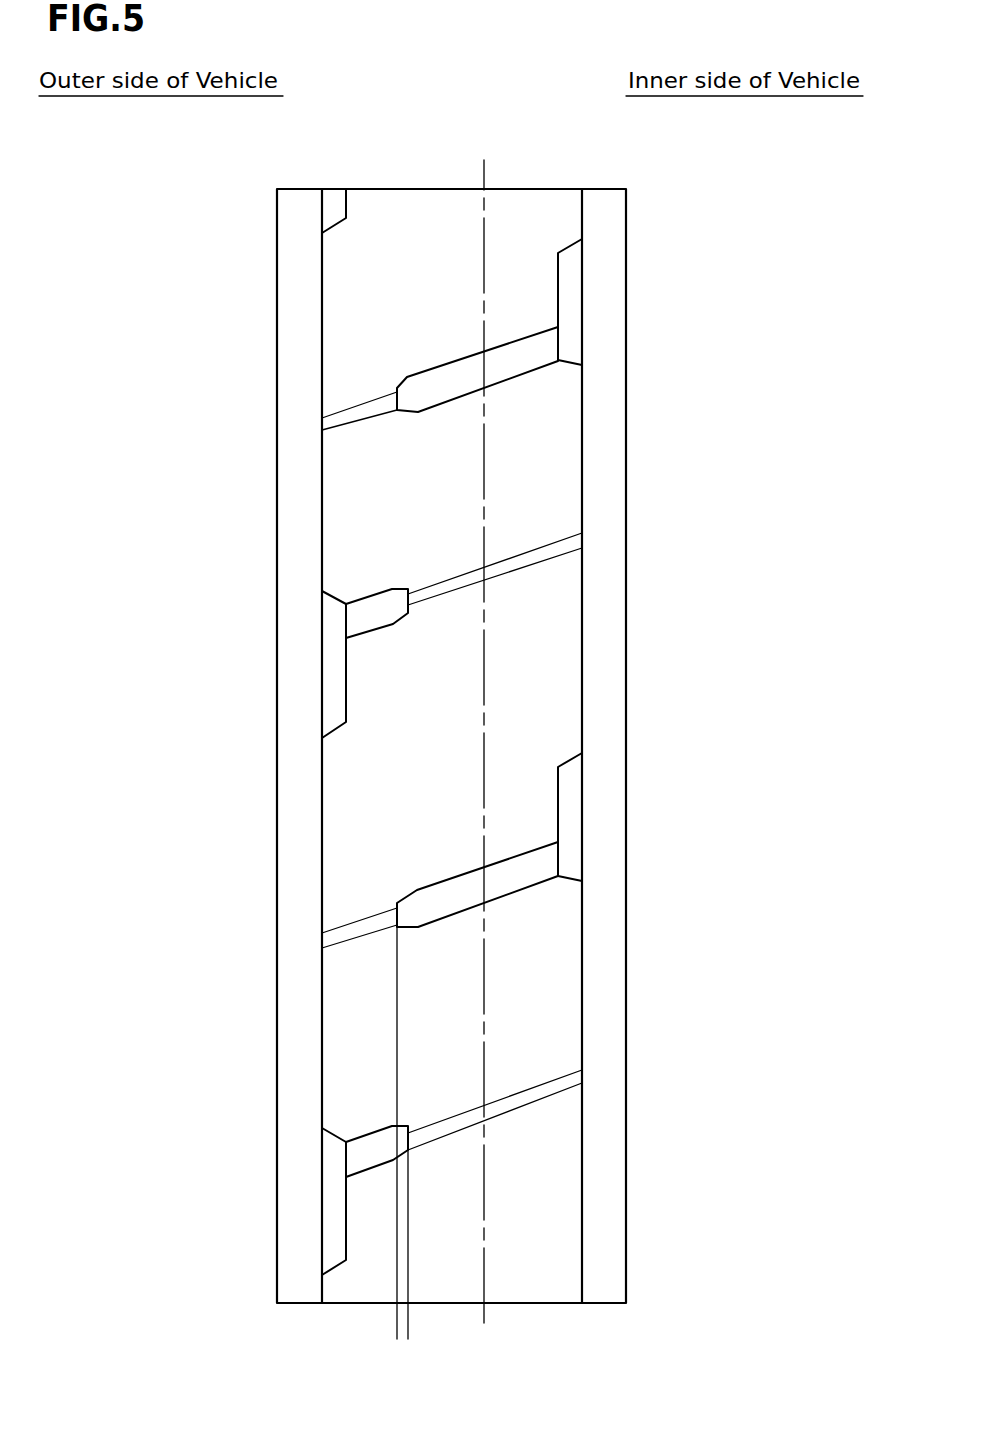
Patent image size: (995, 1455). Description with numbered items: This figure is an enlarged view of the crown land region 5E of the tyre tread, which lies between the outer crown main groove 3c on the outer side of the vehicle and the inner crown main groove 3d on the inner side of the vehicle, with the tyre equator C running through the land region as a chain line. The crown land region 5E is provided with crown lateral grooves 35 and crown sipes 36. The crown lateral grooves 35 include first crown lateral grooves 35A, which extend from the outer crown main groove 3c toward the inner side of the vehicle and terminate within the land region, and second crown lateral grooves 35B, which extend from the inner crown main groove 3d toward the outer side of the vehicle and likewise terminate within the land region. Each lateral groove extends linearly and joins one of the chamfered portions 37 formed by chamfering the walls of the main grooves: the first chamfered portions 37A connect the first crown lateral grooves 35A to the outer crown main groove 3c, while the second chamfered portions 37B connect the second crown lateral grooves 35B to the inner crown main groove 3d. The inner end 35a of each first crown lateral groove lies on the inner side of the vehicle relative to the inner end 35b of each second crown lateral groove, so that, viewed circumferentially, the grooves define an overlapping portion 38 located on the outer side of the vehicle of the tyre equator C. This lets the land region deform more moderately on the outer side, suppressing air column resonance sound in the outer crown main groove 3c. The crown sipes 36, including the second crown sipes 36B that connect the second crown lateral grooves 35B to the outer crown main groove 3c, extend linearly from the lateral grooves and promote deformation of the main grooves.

The outer crown main groove 3c is at (301, 230).
The inner crown main groove 3d is at (605, 230).
The crown land region 5E is at (410, 245).
The tyre equator C is at (484, 731).
The crown lateral grooves 35 is at (517, 360).
The inner end of first crown lateral groove 35a is at (408, 605).
The inner end of second crown lateral groove 35b is at (393, 413).
The first crown lateral grooves 35A is at (375, 1151).
The second crown lateral grooves 35B is at (452, 897).
The crown sipes 36 is at (518, 1099).
The second crown sipes 36B is at (360, 927).
The chamfered portions 37 is at (570, 290).
The first chamfered portions 37A is at (321, 1205).
The second chamfered portions 37B is at (582, 793).
The overlapping portion 38 is at (402, 1152).